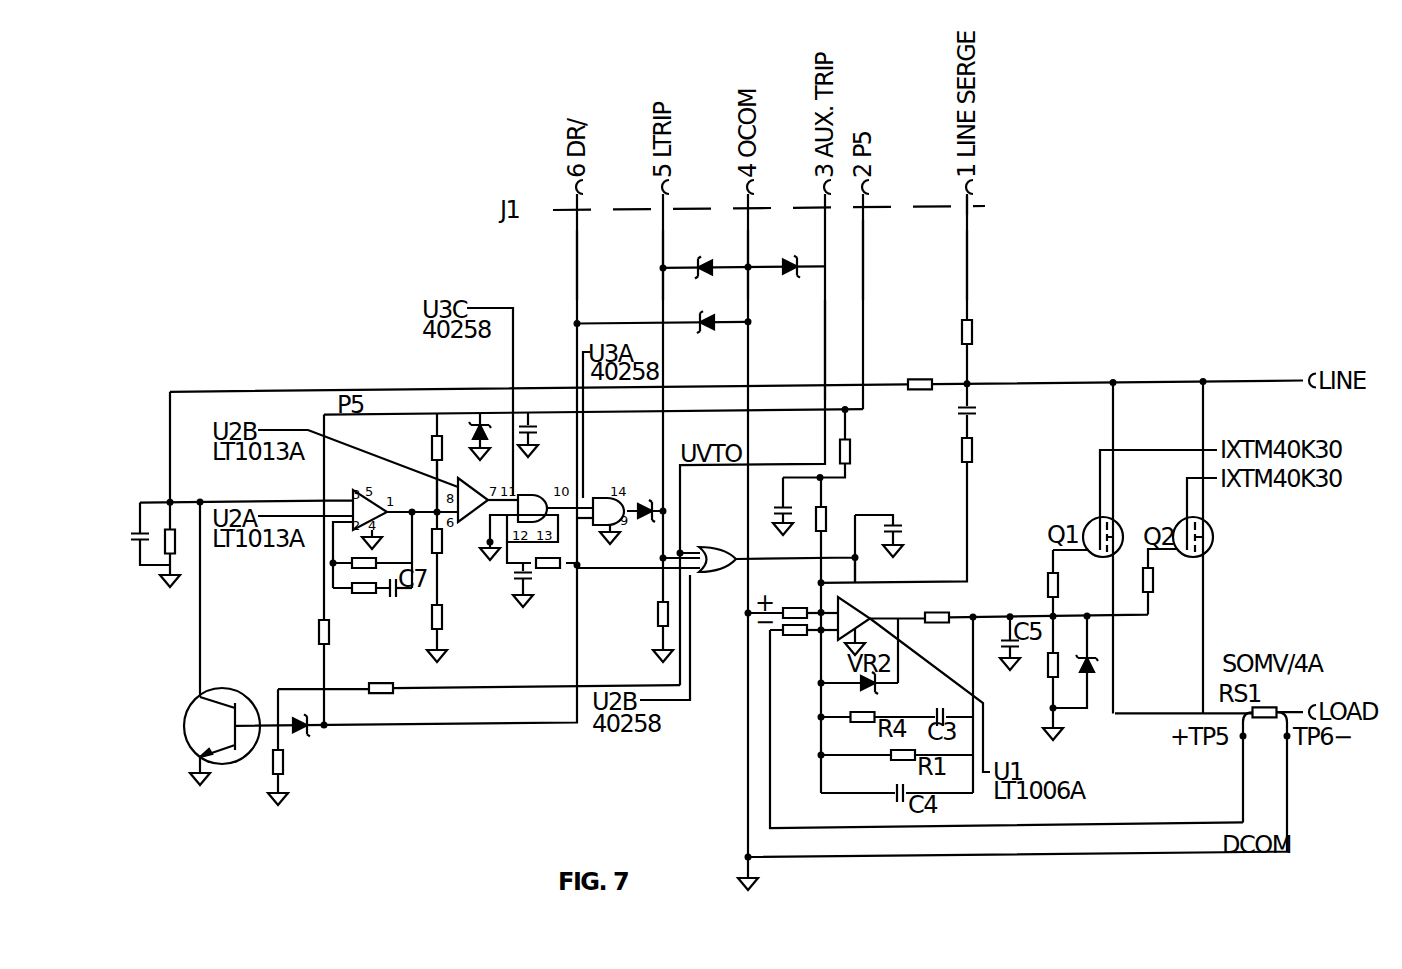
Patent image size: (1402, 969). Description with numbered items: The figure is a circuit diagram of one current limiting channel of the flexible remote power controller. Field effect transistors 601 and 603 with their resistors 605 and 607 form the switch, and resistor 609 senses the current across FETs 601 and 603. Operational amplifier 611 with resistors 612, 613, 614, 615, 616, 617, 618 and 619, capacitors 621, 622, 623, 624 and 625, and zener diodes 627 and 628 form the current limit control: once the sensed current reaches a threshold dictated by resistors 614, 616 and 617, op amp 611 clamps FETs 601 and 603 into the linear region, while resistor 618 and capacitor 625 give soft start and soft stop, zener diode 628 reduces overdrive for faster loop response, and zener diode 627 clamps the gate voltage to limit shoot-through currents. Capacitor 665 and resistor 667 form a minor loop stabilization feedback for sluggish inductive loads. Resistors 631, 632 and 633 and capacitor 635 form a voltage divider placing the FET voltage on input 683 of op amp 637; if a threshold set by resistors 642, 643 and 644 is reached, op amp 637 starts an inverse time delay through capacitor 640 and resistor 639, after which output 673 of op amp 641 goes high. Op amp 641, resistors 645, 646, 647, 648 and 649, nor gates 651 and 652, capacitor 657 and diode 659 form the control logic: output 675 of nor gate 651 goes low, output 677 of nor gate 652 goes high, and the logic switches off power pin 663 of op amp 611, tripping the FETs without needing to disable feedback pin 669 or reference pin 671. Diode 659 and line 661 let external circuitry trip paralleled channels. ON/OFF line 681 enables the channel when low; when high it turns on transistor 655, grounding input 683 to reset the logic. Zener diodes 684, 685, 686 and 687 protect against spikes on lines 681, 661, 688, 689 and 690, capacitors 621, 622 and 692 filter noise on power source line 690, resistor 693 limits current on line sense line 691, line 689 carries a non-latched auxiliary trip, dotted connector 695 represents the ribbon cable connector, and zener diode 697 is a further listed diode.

The field effect transistor 601 is at (1122, 503).
The field effect transistor 603 is at (1212, 503).
The resistor 605 is at (1058, 583).
The resistor 607 is at (1155, 580).
The resistor 609 is at (1263, 683).
The operational amplifier 611 is at (870, 612).
The resistor 612 is at (748, 645).
The resistor 613 is at (850, 723).
The resistor 614 is at (748, 597).
The resistor 615 is at (890, 758).
The resistor 616 is at (827, 517).
The resistor 617 is at (852, 457).
The resistor 618 is at (940, 612).
The resistor 619 is at (1045, 672).
The capacitor 621 is at (777, 508).
The capacitor 622 is at (902, 531).
The capacitor 623 is at (935, 708).
The capacitor 624 is at (900, 798).
The capacitor 625 is at (973, 648).
The zener diode 627 is at (1097, 665).
The zener diode 628 is at (870, 687).
The resistor 631 is at (922, 380).
The resistor 632 is at (176, 541).
The resistor 633 is at (365, 592).
The capacitor 635 is at (136, 540).
The operational amplifier 637 is at (377, 490).
The resistor 639 is at (352, 566).
The capacitor 640 is at (393, 597).
The operational amplifier 641 is at (440, 555).
The resistor 642 is at (445, 633).
The resistor 643 is at (445, 583).
The resistor 644 is at (432, 448).
The resistor 645 is at (384, 676).
The resistor 646 is at (318, 640).
The resistor 647 is at (287, 763).
The resistor 648 is at (552, 566).
The resistor 649 is at (657, 613).
The nor gate 651 is at (533, 458).
The nor gate 652 is at (603, 497).
The transistor 655 is at (192, 701).
The capacitor 657 is at (510, 640).
The diode 659 is at (655, 478).
The line 661 is at (657, 240).
The power pin 663 is at (843, 608).
The capacitor 665 is at (960, 411).
The resistor 667 is at (960, 447).
The pin 669 is at (838, 600).
The pin 671 is at (838, 600).
The output 673 is at (495, 478).
The output 675 is at (580, 497).
The output 677 is at (652, 523).
The ON/OFF line 681 is at (572, 240).
The input 683 is at (337, 493).
The zener diode 684 is at (478, 413).
The zener diode 685 is at (722, 352).
The zener diode 686 is at (720, 246).
The zener diode 687 is at (795, 278).
The signal line 688 is at (751, 240).
The signal line 689 is at (825, 347).
The power source signal line 690 is at (865, 238).
The line 691 is at (968, 266).
The capacitor 692 is at (525, 412).
The resistor 693 is at (972, 330).
The connector 695 is at (968, 205).
The zener diode 697 is at (300, 733).